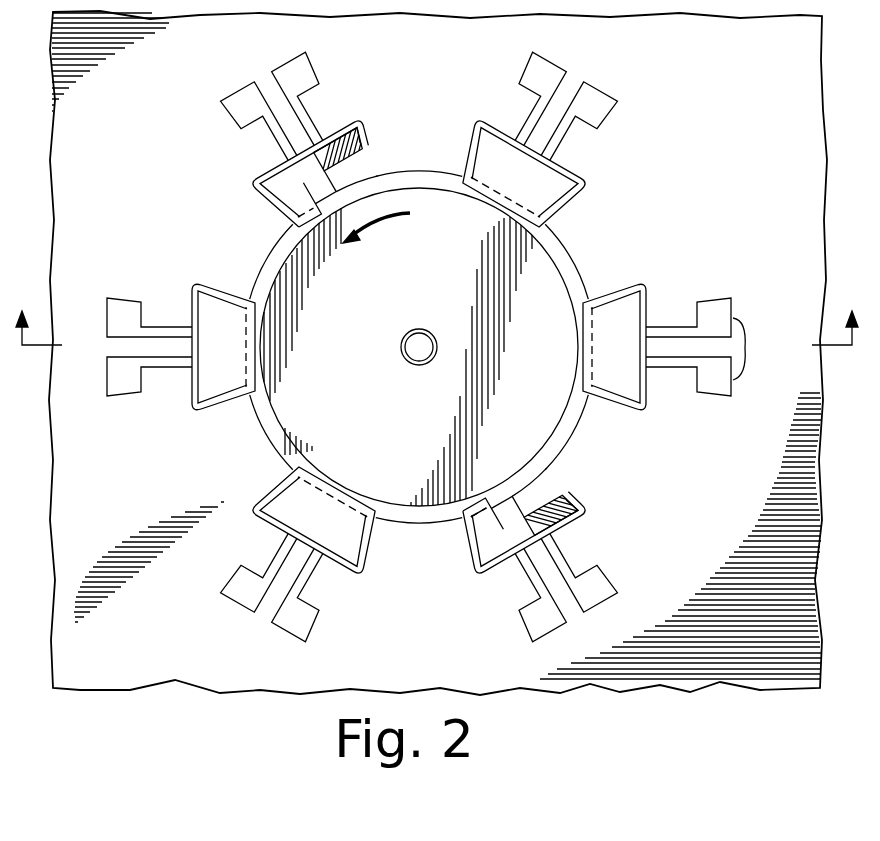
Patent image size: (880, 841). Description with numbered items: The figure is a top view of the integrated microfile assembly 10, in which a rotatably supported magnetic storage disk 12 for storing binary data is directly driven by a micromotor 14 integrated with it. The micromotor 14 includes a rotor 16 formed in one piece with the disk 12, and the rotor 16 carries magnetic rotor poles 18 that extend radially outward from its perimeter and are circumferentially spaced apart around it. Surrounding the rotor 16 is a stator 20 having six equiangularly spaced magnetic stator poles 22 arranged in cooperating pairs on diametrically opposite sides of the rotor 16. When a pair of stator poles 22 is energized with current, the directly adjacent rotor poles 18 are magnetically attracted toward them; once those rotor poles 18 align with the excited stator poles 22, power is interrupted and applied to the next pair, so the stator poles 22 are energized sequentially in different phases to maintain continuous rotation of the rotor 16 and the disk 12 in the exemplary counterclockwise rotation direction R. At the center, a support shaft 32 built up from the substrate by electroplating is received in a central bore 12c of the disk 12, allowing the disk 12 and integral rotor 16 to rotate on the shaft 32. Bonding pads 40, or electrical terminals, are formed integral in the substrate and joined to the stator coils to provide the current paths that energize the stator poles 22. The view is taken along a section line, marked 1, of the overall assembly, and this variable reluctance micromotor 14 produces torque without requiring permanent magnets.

The microfile assembly 10 is at (160, 151).
The magnetic storage disk 12 is at (419, 311).
The central bore 12c is at (419, 330).
The support shaft 32 is at (419, 352).
The micromotor 14 is at (688, 316).
The rotor 16 is at (562, 254).
The rotor poles 18 is at (257, 446).
The stator 20 is at (244, 301).
The stator poles 22 is at (462, 536).
The bonding pads 40 is at (720, 347).
The rotation direction R is at (428, 213).
The section line 1 is at (437, 310).